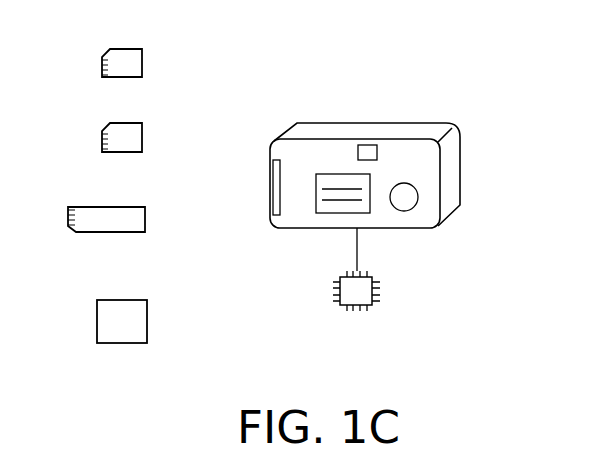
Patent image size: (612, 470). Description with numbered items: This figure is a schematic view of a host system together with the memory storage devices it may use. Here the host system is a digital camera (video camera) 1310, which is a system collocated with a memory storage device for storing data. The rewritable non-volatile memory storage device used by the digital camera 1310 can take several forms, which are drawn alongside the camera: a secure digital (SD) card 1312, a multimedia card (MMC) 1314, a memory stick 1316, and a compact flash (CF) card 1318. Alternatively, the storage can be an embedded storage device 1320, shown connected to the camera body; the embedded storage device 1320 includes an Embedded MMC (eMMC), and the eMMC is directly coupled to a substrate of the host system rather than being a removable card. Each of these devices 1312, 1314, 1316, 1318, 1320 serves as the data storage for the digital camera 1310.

The digital camera (video camera) 1310 is at (463, 162).
The secure digital (SD) card 1312 is at (143, 57).
The multimedia card (MMC) 1314 is at (143, 131).
The memory stick 1316 is at (146, 220).
The compact flash (CF) card 1318 is at (148, 315).
The embedded storage device 1320 is at (381, 292).